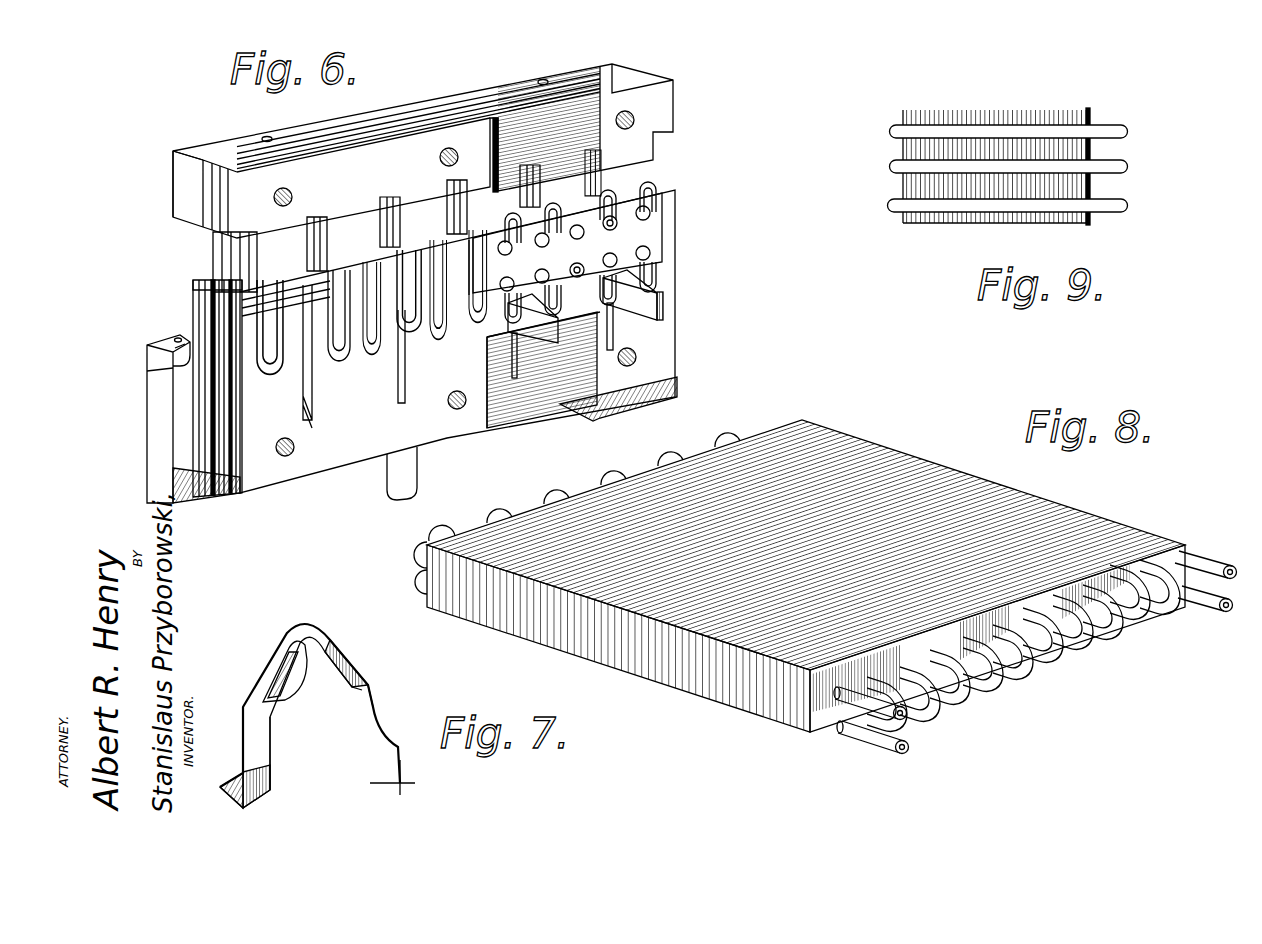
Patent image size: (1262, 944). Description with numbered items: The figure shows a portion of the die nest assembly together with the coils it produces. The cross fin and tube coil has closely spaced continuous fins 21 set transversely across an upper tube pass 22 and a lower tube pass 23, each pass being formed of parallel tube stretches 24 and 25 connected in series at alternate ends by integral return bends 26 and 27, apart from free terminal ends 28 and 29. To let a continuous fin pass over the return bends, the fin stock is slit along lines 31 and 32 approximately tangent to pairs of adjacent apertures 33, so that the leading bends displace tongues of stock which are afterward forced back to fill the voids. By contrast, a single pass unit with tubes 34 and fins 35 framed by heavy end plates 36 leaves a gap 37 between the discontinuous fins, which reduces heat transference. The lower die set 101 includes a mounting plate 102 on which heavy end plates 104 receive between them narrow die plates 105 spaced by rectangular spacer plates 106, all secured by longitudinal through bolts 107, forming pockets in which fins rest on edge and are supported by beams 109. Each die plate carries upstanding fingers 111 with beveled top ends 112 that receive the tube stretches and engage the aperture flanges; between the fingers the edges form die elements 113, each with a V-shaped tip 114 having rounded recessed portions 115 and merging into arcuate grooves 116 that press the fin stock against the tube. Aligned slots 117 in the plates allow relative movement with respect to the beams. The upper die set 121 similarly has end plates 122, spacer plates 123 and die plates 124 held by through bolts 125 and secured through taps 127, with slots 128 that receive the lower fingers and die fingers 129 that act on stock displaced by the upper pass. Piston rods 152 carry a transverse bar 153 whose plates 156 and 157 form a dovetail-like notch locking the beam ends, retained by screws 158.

In FIG. 6, the fins 21 is at (654, 207).
In FIG. 8, the fins 21 is at (679, 692).
In FIG. 9, the fins 21 is at (1020, 113).
In FIG. 8, the upper tube pass 22 is at (1210, 551).
In FIG. 9, the upper tube pass 22 is at (1127, 128).
In FIG. 8, the lower tube pass 23 is at (1208, 608).
In FIG. 9, the lower tube pass 23 is at (1127, 165).
In FIG. 8, the tube stretches 24 is at (1130, 583).
In FIG. 8, the tube stretches 25 is at (1068, 625).
In FIG. 8, the return bends 26 is at (1040, 640).
In FIG. 8, the return bends 27 is at (1165, 618).
In FIG. 8, the free terminal end 28 is at (905, 722).
In FIG. 8, the free terminal end 29 is at (905, 753).
In FIG. 6, the slit 31 is at (617, 227).
In FIG. 8, the slit 31 is at (864, 698).
In FIG. 6, the slit 32 is at (617, 258).
In FIG. 8, the slit 32 is at (866, 714).
In FIG. 6, the apertures 33 is at (612, 240).
In FIG. 9, the tubes 34 is at (1127, 204).
In FIG. 9, the fins 35 is at (1024, 222).
In FIG. 9, the end plates 36 is at (1091, 110).
In FIG. 9, the gap 37 is at (902, 185).
In FIG. 6, the lower die set 101 is at (678, 276).
In FIG. 6, the mounting plate 102 is at (670, 392).
In FIG. 6, the end plates 104 is at (222, 444).
In FIG. 6, the die plates 105 is at (238, 454).
In FIG. 7, the die plates 105 is at (414, 777).
In FIG. 6, the spacer plates 106 is at (667, 341).
In FIG. 6, the through bolts 107 is at (285, 457).
In FIG. 6, the beams 109 is at (665, 304).
In FIG. 6, the fingers 111 is at (250, 333).
In FIG. 6, the beveled top ends 112 is at (195, 285).
In FIG. 6, the die elements 113 is at (282, 372).
In FIG. 7, the die elements 113 is at (373, 702).
In FIG. 7, the V-shaped tip 114 is at (295, 630).
In FIG. 7, the recessed portions 115 is at (283, 668).
In FIG. 6, the arcuate grooves 116 is at (370, 348).
In FIG. 7, the arcuate grooves 116 is at (383, 740).
In FIG. 6, the slots 117 is at (398, 398).
In FIG. 6, the upper die set 121 is at (682, 102).
In FIG. 6, the end plates 122 is at (185, 182).
In FIG. 6, the spacer plates 123 is at (230, 208).
In FIG. 6, the die plates 124 is at (252, 266).
In FIG. 6, the through bolts 125 is at (438, 160).
In FIG. 6, the taps 127 is at (264, 136).
In FIG. 6, the slots 128 is at (326, 222).
In FIG. 6, the die fingers 129 is at (425, 222).
In FIG. 6, the piston rods 152 is at (387, 478).
In FIG. 6, the bar 153 is at (157, 402).
In FIG. 6, the plate 156 is at (150, 350).
In FIG. 6, the plate 157 is at (153, 375).
In FIG. 6, the screws 158 is at (174, 339).